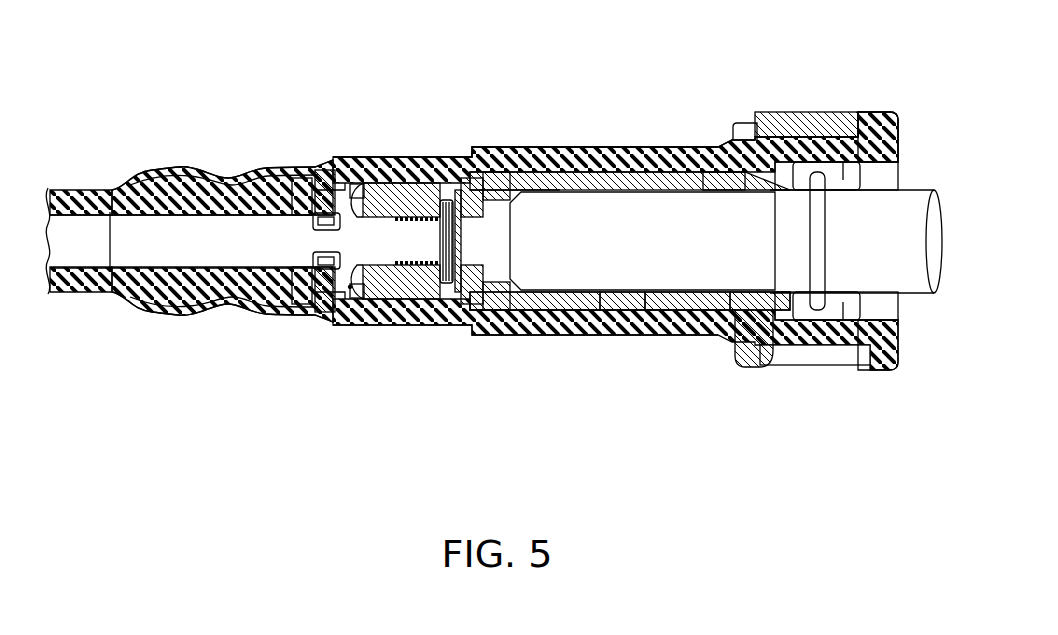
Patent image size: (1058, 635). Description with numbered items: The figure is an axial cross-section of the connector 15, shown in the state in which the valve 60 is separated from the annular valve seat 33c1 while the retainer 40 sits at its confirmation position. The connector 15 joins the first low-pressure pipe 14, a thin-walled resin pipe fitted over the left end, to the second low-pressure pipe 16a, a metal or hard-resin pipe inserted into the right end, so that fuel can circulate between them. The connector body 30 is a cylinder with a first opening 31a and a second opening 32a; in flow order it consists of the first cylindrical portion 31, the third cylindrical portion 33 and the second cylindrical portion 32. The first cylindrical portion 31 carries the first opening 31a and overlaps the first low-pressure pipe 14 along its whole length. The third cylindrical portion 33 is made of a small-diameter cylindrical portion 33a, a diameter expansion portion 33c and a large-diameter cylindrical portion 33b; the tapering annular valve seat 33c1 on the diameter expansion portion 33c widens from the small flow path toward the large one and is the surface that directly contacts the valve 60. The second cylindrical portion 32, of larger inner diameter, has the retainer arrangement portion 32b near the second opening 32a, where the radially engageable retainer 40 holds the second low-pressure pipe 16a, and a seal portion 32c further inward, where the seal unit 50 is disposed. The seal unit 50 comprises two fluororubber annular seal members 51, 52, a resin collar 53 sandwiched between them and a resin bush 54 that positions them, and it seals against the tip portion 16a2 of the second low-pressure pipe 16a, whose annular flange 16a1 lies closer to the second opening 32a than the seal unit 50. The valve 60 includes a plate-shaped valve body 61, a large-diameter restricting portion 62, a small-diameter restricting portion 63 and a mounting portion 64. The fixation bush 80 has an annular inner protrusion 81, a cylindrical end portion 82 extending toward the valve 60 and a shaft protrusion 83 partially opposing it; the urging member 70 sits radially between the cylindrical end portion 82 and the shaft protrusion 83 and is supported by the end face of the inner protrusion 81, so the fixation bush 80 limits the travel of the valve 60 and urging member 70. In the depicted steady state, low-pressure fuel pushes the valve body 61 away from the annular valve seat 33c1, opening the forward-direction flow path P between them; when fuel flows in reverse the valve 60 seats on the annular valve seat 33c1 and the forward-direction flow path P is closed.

The first low-pressure pipe 14 is at (80, 292).
The connector 15 is at (847, 60).
The second low-pressure pipe 16a is at (912, 292).
The annular flange 16a1 is at (818, 302).
The tip portion 16a2 is at (584, 275).
The connector body 30 is at (537, 147).
The first cylindrical portion 31 is at (153, 207).
The first opening 31a is at (100, 227).
The second cylindrical portion 32 is at (700, 147).
The second opening 32a is at (898, 163).
The retainer arrangement portion 32b is at (838, 147).
The seal portion 32c is at (648, 155).
The third cylindrical portion 33 is at (345, 47).
The small-diameter cylindrical portion 33a is at (262, 170).
The large-diameter cylindrical portion 33b is at (327, 200).
The diameter expansion portion 33c is at (300, 197).
The annular valve seat 33c1 is at (357, 190).
The retainer 40 is at (792, 118).
The seal unit 50 is at (758, 418).
The annular seal member 51 is at (581, 302).
The annular seal member 52 is at (660, 303).
The collar 53 is at (632, 303).
The bush 54 is at (755, 308).
The valve 60 is at (397, 193).
The valve body 61 is at (322, 292).
The large-diameter restricting portion 62 is at (367, 293).
The small-diameter restricting portion 63 is at (300, 300).
The mounting portion 64 is at (383, 290).
The urging member 70 is at (450, 283).
The fixation bush 80 is at (550, 176).
The inner protrusion 81 is at (500, 178).
The cylindrical end portion 82 is at (457, 175).
The shaft protrusion 83 is at (492, 285).
The forward-direction flow path P is at (350, 287).